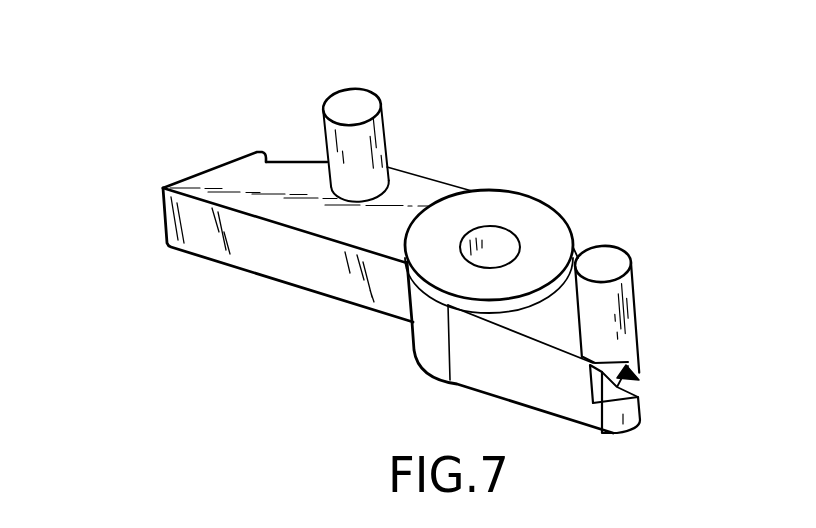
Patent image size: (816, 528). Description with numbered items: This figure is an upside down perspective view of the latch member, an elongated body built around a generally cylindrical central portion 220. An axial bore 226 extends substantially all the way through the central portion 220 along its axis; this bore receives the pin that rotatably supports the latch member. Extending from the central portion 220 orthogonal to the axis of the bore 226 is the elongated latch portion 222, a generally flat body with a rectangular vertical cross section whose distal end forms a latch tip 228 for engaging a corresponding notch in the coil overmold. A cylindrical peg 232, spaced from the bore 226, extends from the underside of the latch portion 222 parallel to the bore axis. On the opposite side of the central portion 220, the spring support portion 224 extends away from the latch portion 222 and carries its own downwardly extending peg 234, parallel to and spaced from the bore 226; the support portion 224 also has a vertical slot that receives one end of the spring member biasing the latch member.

The cylindrical central portion 220 is at (553, 210).
The latch portion 222 is at (323, 219).
The spring support portion 224 is at (571, 410).
The axial bore 226 is at (507, 231).
The latch tip 228 is at (163, 188).
The cylindrical peg 232 is at (342, 102).
The peg 234 is at (622, 265).